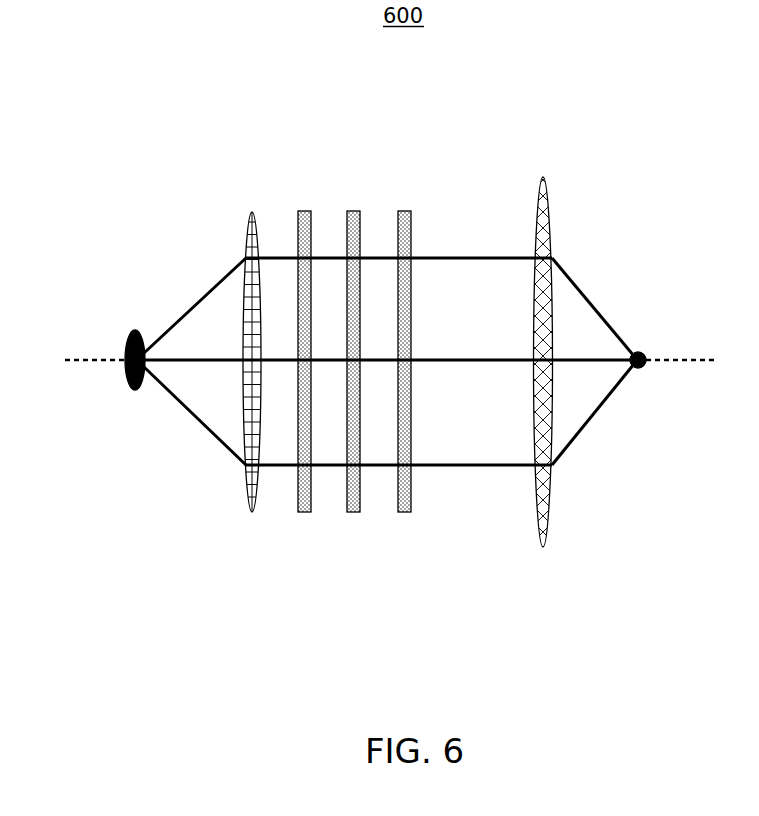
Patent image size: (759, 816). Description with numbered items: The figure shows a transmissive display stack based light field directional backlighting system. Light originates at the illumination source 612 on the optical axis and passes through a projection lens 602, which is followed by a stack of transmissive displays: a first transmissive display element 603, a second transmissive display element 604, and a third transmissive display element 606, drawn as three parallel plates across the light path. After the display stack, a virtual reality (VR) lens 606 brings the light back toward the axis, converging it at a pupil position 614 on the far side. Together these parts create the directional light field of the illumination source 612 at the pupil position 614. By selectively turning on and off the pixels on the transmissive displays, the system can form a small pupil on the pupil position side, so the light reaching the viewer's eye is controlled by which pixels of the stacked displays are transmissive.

The projection lens 602 is at (253, 212).
The first transmissive display element 603 is at (307, 210).
The second transmissive display element 604 is at (354, 210).
The third transmissive display element / virtual reality (VR) lens 606 is at (404, 210).
The illumination source 612 is at (130, 323).
The pupil position 614 is at (648, 390).